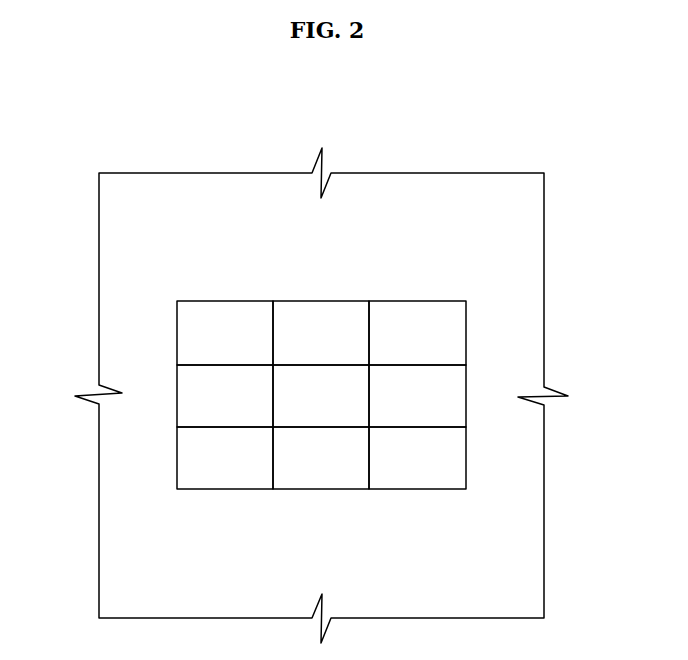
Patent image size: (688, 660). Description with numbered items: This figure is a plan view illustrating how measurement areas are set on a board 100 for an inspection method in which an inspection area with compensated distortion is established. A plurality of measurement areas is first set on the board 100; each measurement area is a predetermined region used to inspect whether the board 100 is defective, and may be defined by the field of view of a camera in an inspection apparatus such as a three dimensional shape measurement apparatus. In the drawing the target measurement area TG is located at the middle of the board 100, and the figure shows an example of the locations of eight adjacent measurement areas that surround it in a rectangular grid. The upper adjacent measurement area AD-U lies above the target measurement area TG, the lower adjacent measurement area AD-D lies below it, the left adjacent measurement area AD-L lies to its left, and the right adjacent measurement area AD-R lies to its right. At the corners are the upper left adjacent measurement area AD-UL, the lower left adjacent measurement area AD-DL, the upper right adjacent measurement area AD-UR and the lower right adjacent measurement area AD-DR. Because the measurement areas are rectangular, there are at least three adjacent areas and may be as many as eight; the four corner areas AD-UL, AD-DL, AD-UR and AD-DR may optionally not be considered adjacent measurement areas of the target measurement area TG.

The board 100 is at (439, 187).
The upper left adjacent measurement area AD-UL is at (238, 312).
The upper adjacent measurement area AD-U is at (321, 315).
The upper right adjacent measurement area AD-UR is at (405, 312).
The left adjacent measurement area AD-L is at (185, 373).
The target measurement area TG is at (288, 400).
The right adjacent measurement area AD-R is at (457, 379).
The lower left adjacent measurement area AD-DL is at (239, 480).
The lower adjacent measurement area AD-D is at (322, 478).
The lower right adjacent measurement area AD-DR is at (405, 480).